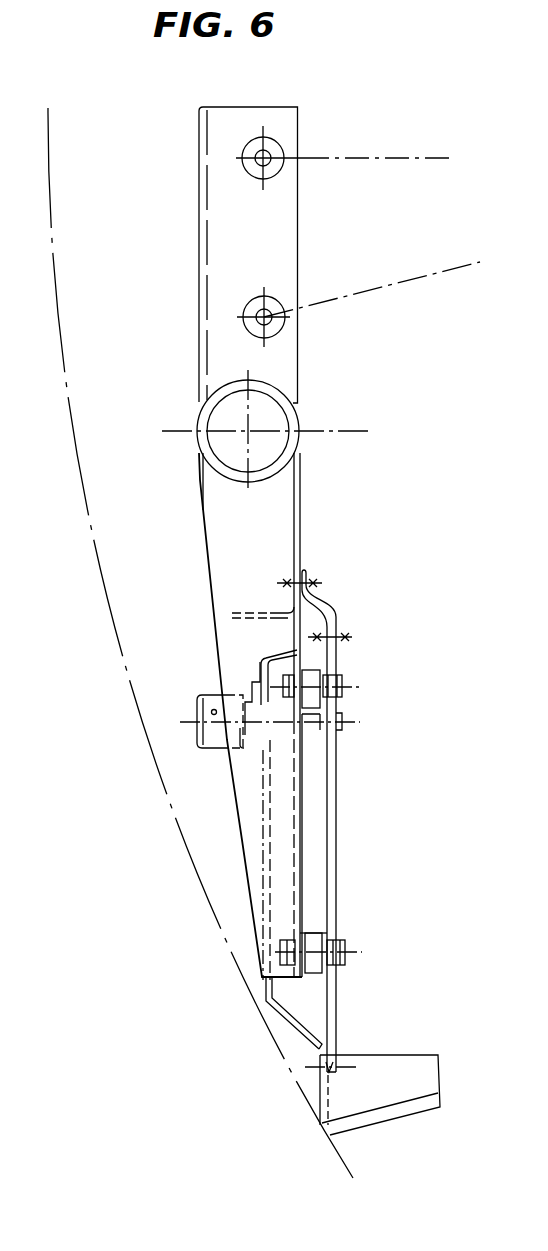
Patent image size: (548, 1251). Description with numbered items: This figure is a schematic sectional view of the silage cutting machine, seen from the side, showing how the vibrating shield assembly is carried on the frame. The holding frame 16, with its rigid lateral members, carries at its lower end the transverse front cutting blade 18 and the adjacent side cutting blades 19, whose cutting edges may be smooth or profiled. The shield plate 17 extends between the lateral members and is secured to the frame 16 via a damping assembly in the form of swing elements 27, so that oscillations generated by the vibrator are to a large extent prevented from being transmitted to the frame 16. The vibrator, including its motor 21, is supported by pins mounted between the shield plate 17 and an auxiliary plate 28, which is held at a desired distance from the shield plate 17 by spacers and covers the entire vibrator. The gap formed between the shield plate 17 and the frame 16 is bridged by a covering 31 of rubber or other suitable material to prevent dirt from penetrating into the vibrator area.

The holding frame 16 is at (218, 552).
The shield plate 17 is at (336, 880).
The transverse front cutting blade 18 is at (323, 1050).
The side cutting blade 19 is at (382, 1080).
The motor 21 is at (217, 737).
The swing element 27 is at (312, 667).
The auxiliary plate 28 is at (267, 992).
The covering 31 is at (333, 607).